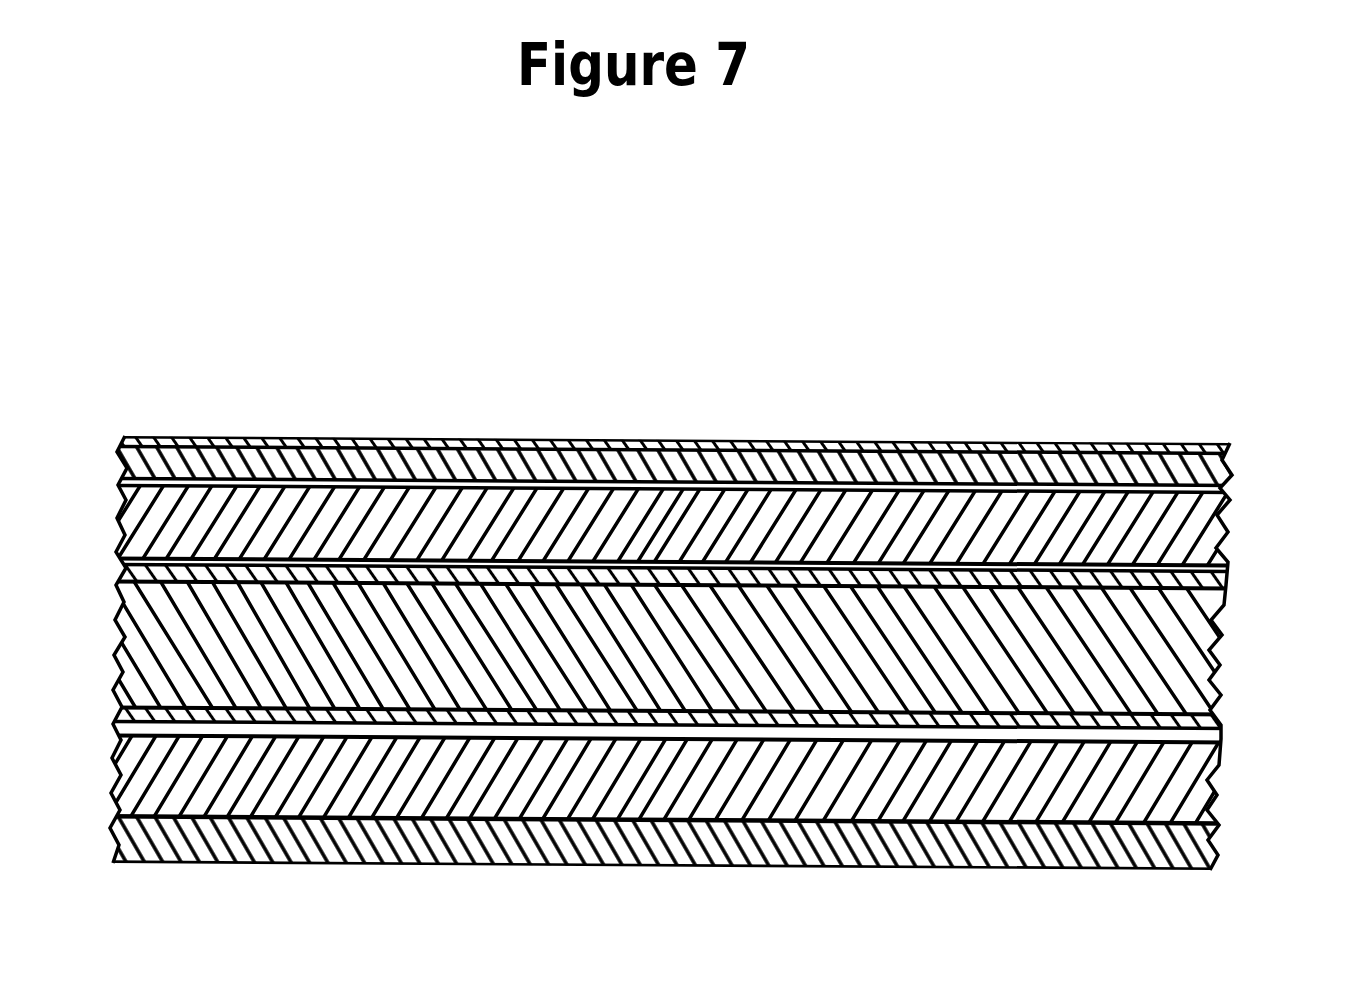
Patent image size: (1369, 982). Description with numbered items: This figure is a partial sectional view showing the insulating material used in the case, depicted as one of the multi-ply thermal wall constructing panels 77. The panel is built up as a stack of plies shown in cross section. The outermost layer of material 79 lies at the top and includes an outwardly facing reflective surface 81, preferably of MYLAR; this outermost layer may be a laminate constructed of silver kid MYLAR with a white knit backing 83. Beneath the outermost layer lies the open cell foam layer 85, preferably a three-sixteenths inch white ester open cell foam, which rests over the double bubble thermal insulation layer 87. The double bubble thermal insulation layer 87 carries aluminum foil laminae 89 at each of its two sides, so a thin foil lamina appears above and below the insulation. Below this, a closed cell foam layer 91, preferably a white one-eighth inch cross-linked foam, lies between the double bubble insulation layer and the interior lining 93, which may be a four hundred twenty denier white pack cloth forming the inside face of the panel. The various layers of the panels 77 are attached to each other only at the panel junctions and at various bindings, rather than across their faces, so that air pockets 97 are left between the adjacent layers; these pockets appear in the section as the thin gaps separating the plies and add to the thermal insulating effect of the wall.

The multi-ply thermal wall constructing panel 77 is at (1028, 443).
The outermost layer of material 79 is at (570, 467).
The outwardly facing reflective surface 81 is at (455, 440).
The white knit backing 83 is at (733, 481).
The open cell foam layer 85 is at (858, 545).
The double bubble thermal insulation layer 87 is at (1143, 637).
The aluminum foil laminae 89 is at (1230, 582).
The closed cell foam layer 91 is at (1140, 783).
The interior lining 93 is at (1140, 845).
The air pockets 97 is at (1227, 480).